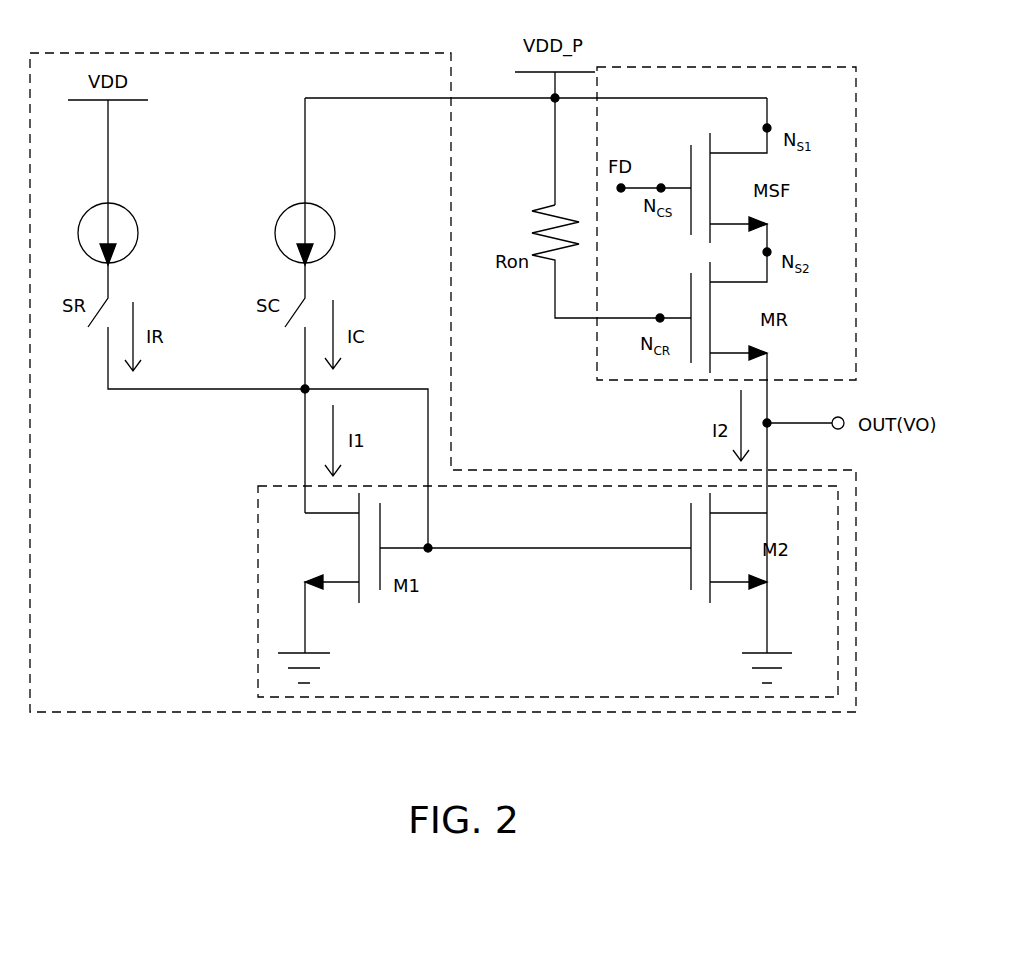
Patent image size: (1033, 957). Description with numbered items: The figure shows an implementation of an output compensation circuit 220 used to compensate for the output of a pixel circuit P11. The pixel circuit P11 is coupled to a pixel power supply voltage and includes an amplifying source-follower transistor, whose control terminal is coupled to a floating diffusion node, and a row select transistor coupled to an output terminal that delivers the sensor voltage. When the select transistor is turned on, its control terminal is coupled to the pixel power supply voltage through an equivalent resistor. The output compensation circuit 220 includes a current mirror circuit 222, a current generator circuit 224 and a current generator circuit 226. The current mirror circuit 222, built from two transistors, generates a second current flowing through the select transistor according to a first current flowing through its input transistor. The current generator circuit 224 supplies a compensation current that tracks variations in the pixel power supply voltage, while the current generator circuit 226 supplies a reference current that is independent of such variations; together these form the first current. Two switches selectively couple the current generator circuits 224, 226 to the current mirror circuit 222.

The output compensation circuit 220 is at (258, 53).
The current mirror circuit 222 is at (838, 622).
The current generator circuit 224 is at (333, 218).
The current generator circuit 226 is at (137, 218).
The pixel circuit P11 is at (787, 67).